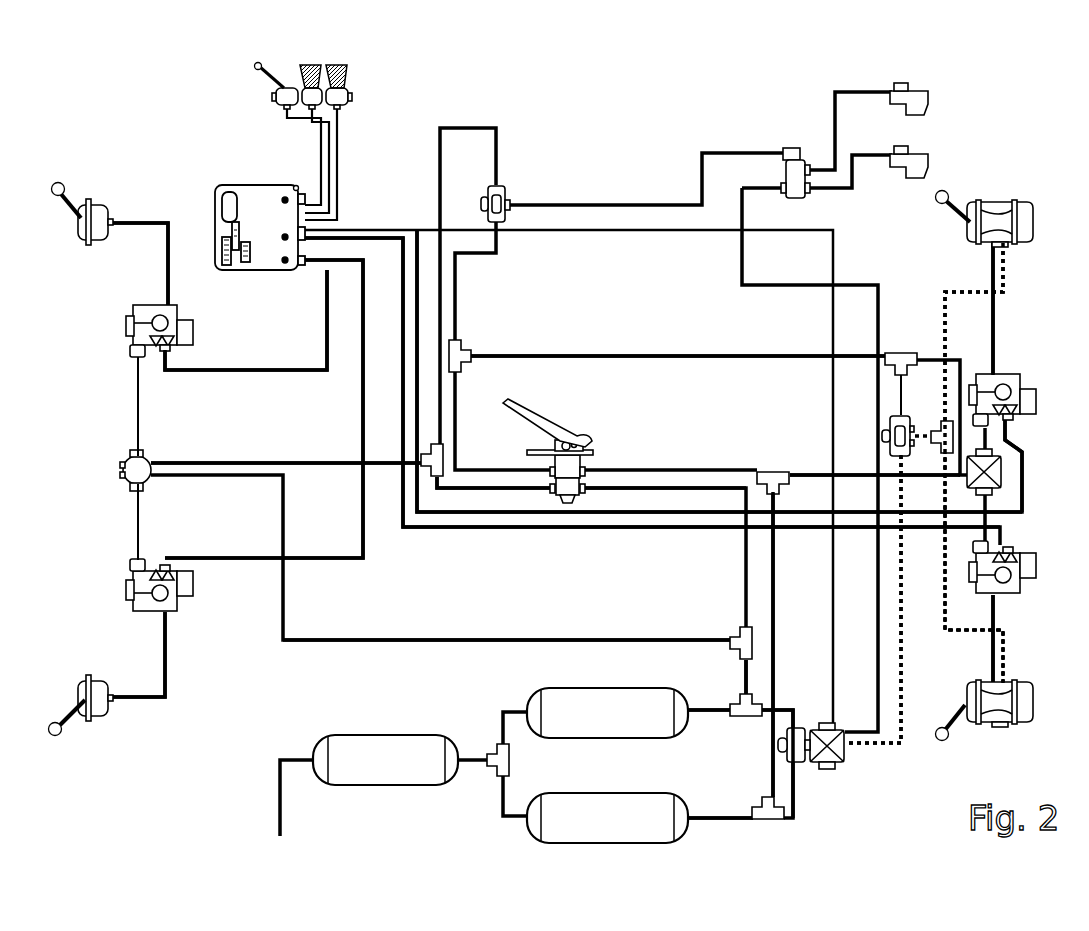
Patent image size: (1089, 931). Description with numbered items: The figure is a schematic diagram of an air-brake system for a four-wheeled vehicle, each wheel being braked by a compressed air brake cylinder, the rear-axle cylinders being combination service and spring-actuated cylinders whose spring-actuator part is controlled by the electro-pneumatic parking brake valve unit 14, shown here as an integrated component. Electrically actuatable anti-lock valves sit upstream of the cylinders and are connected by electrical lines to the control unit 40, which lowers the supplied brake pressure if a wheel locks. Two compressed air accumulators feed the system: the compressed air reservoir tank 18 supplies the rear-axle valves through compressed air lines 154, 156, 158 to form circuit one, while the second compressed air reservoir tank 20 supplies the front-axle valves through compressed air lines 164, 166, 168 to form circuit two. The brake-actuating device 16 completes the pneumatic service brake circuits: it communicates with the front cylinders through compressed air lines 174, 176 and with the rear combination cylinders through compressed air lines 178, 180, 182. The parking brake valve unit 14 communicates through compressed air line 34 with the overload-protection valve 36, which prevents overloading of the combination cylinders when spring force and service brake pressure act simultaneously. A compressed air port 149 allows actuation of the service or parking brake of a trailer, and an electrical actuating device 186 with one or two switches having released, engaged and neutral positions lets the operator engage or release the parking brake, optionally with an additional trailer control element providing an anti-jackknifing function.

The parking brake valve unit 14 is at (838, 762).
The brake-actuating device 16 is at (590, 442).
The compressed air reservoir tank 18 is at (652, 834).
The compressed air accumulator 20 is at (636, 735).
The compressed air line 34 is at (898, 658).
The overload-protection valve 36 is at (908, 420).
The control unit 40 is at (262, 270).
The compressed air port 149 is at (936, 100).
The compressed air line 154 is at (716, 822).
The compressed air line 156 is at (790, 598).
The compressed air line 158 is at (810, 470).
The compressed air line 164 is at (703, 714).
The compressed air line 166 is at (740, 672).
The compressed air line 168 is at (582, 640).
The compressed air line 174 is at (478, 492).
The compressed air line 176 is at (322, 458).
The compressed air line 178 is at (492, 468).
The compressed air line 180 is at (656, 355).
The compressed air line 182 is at (935, 354).
The electrical actuating device 186 is at (349, 66).